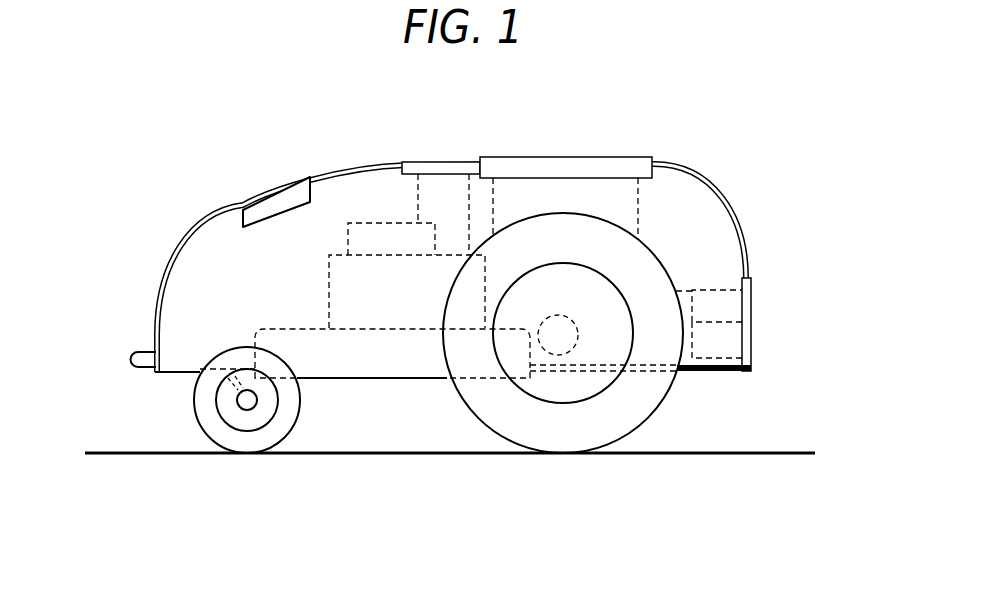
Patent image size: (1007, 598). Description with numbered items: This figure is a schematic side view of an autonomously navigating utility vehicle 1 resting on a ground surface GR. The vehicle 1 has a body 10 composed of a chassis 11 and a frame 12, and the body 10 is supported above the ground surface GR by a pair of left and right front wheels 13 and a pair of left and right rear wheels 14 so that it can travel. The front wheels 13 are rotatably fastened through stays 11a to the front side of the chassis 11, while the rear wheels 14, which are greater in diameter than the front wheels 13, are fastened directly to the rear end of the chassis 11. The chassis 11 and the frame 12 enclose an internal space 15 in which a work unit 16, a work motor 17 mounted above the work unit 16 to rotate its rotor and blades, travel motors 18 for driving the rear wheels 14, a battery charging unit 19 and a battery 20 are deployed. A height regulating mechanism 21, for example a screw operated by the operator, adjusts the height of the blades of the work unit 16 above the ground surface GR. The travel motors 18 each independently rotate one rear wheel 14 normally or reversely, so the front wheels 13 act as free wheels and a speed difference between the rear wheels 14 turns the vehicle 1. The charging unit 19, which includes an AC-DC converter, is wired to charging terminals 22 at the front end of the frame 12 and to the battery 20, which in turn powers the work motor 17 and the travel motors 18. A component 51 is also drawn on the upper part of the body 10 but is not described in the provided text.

The autonomously navigating utility vehicle 1 is at (480, 290).
The body 10 is at (501, 325).
The chassis 11 is at (753, 347).
The stays 11a is at (236, 398).
The frame 12 is at (752, 279).
The front wheels 13 is at (200, 427).
The rear wheels 14 is at (468, 407).
The internal space 15 is at (718, 222).
The work unit 16 is at (373, 361).
The work motor 17 is at (393, 303).
The travel motors 18 is at (565, 318).
The battery charging unit 19 is at (729, 318).
The battery 20 is at (729, 355).
The height regulating mechanism 21 is at (404, 251).
The charging terminals 22 is at (133, 352).
The sensor module 51 is at (280, 191).
The ground surface GR is at (692, 451).